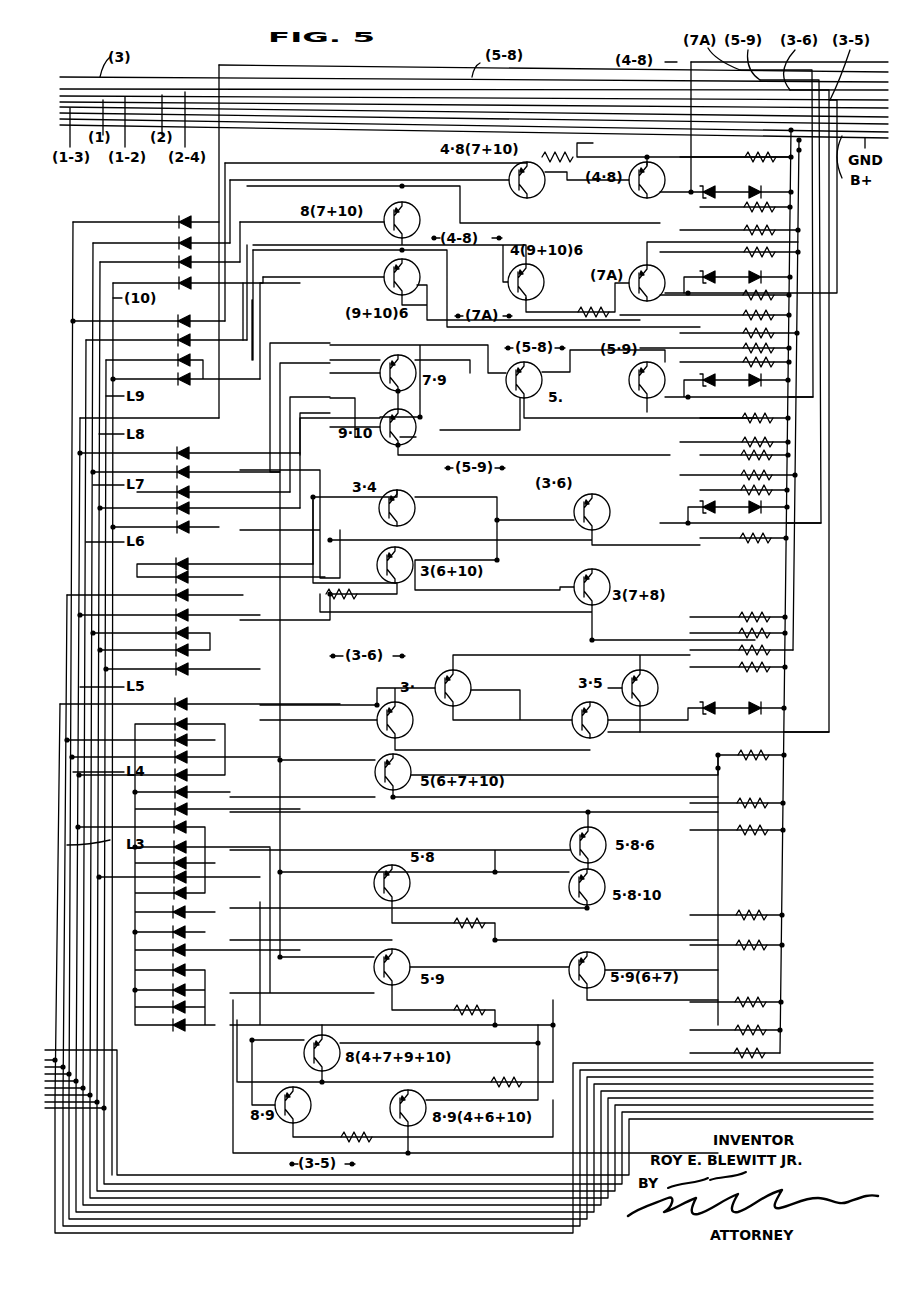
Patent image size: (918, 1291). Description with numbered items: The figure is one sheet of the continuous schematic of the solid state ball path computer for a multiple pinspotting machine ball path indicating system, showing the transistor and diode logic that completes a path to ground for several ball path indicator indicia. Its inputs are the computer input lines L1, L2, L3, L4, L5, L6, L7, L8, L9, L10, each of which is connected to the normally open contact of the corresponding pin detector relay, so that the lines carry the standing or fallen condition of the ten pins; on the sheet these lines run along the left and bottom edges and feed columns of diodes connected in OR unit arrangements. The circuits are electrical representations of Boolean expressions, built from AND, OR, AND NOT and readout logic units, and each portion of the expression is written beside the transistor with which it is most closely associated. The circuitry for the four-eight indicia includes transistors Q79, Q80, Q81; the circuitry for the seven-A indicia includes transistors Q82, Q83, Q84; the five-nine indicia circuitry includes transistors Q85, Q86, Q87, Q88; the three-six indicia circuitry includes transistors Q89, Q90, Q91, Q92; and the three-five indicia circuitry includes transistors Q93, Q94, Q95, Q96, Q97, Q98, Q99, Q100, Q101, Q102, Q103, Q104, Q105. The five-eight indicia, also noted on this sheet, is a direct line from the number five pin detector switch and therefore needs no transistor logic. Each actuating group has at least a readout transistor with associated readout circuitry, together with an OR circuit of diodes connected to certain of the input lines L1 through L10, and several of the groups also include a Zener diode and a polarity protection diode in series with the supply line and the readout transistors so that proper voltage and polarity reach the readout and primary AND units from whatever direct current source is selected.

The transistor Q79 is at (419, 216).
The transistor Q80 is at (667, 172).
The transistor Q81 is at (507, 180).
The transistor Q82 is at (384, 277).
The transistor Q83 is at (507, 283).
The transistor Q84 is at (635, 270).
The transistor Q85 is at (378, 373).
The transistor Q86 is at (509, 383).
The transistor Q87 is at (626, 380).
The transistor Q88 is at (415, 427).
The transistor Q89 is at (415, 508).
The transistor Q90 is at (571, 512).
The transistor Q91 is at (378, 565).
The transistor Q92 is at (570, 587).
The transistor Q93 is at (467, 680).
The transistor Q94 is at (631, 678).
The transistor Q95 is at (413, 720).
The transistor Q96 is at (573, 718).
The transistor Q97 is at (376, 772).
The transistor Q98 is at (381, 872).
The transistor Q99 is at (568, 845).
The transistor Q100 is at (560, 887).
The transistor Q101 is at (366, 967).
The transistor Q102 is at (559, 970).
The transistor Q103 is at (301, 1053).
The transistor Q104 is at (315, 1105).
The transistor Q105 is at (389, 1111).
The input line L1 is at (118, 1056).
The input line L2 is at (113, 1077).
The input line L3 is at (85, 1118).
The input line L4 is at (72, 1132).
The input line L5 is at (122, 1192).
The input line L6 is at (145, 1200).
The input line L7 is at (172, 1210).
The input line L8 is at (200, 1220).
The input line L9 is at (440, 1222).
The input line L10 is at (493, 1225).